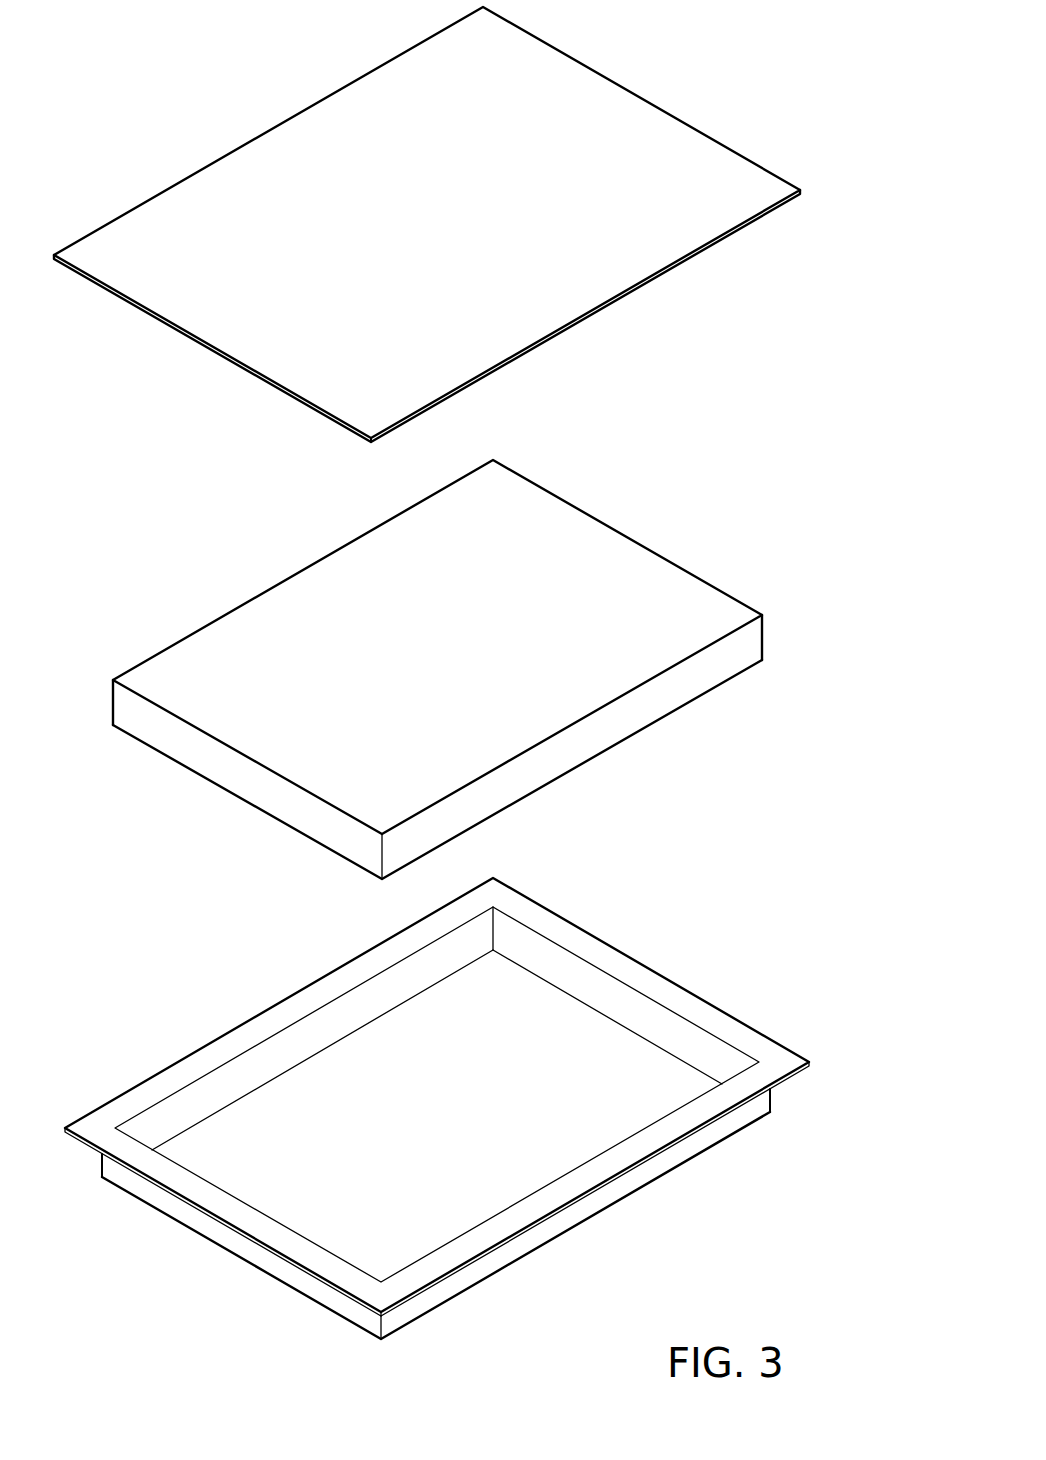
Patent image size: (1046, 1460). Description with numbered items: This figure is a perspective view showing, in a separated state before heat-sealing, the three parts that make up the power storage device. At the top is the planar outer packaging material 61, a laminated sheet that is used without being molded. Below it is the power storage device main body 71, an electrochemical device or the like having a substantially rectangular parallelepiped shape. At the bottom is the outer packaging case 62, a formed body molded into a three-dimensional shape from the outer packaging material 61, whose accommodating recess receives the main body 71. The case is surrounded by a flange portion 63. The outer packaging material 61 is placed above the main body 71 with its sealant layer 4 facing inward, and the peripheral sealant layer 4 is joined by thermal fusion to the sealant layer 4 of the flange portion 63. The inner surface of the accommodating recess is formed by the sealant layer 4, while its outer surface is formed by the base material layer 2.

The outer packaging material 61 is at (624, 113).
The power storage device main body 71 is at (603, 548).
The outer packaging case 62 is at (463, 1095).
The flange portion 63 is at (649, 980).
The sealant layer 4 is at (547, 1033).
The base material layer 2 is at (567, 1217).